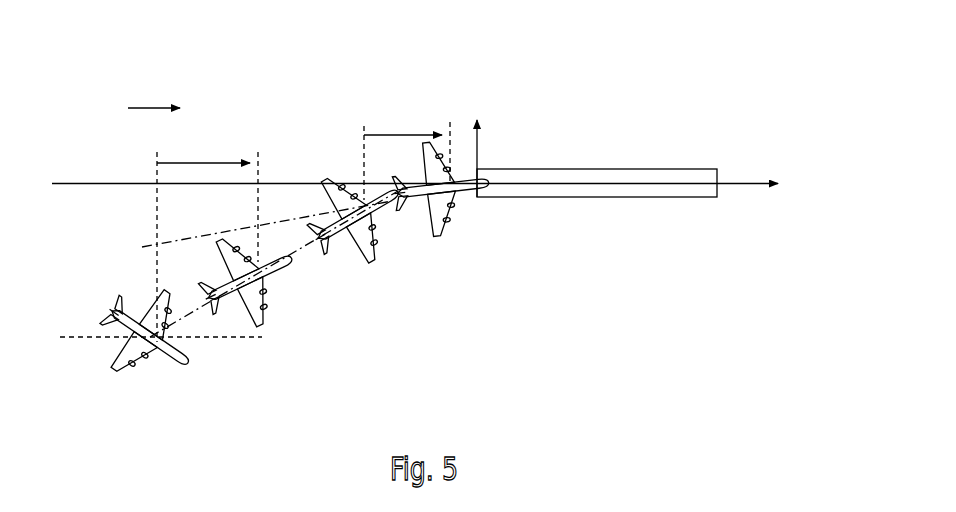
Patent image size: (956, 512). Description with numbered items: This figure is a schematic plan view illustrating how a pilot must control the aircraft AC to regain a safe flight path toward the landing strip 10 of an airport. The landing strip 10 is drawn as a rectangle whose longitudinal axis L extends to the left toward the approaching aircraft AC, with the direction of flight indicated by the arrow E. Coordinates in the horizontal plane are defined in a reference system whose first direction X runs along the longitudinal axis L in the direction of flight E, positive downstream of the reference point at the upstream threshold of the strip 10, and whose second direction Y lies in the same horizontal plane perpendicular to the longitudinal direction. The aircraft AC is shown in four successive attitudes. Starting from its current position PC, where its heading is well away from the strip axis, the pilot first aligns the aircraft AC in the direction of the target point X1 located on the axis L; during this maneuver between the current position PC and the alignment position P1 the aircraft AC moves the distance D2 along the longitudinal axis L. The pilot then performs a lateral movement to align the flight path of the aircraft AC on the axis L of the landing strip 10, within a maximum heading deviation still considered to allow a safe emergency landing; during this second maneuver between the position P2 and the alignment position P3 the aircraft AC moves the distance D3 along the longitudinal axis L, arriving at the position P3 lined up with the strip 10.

The direction of flight arrow E is at (152, 108).
The distance D2 is at (203, 151).
The distance D3 is at (403, 126).
The target point X1 is at (413, 165).
The second direction S0Y Y is at (487, 158).
The first direction S0X X is at (747, 170).
The longitudinal axis L is at (614, 183).
The landing strip 10 is at (671, 197).
The aircraft AC is at (300, 293).
The current position PC is at (160, 380).
The alignment position P1 is at (284, 337).
The position P2 is at (382, 281).
The alignment position P3 is at (460, 242).